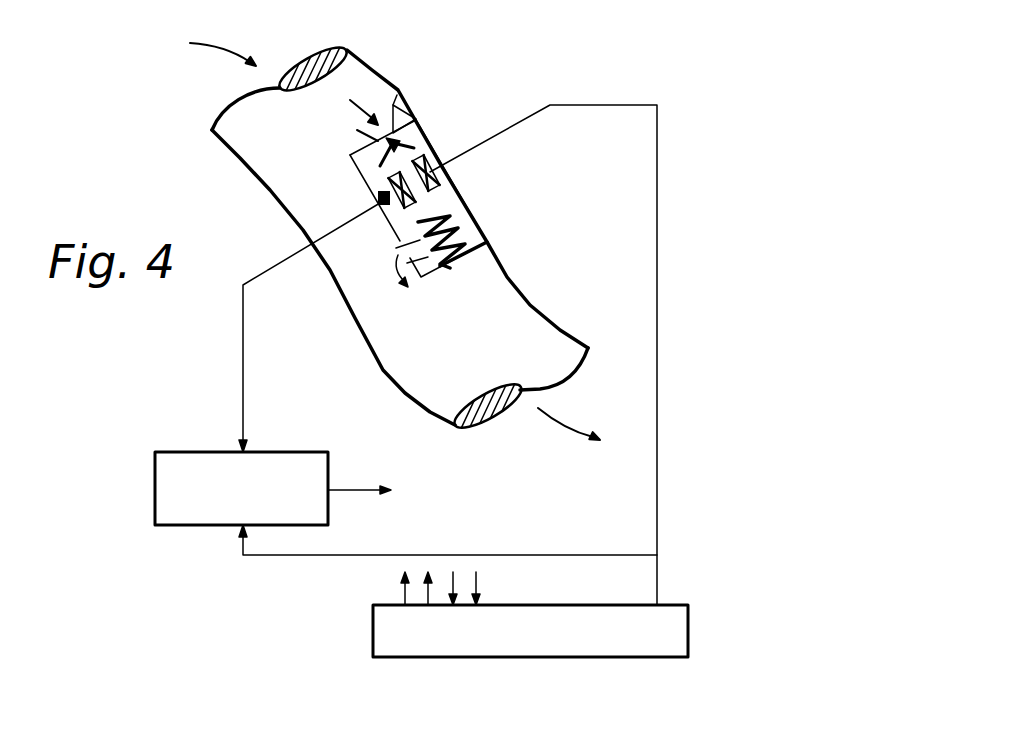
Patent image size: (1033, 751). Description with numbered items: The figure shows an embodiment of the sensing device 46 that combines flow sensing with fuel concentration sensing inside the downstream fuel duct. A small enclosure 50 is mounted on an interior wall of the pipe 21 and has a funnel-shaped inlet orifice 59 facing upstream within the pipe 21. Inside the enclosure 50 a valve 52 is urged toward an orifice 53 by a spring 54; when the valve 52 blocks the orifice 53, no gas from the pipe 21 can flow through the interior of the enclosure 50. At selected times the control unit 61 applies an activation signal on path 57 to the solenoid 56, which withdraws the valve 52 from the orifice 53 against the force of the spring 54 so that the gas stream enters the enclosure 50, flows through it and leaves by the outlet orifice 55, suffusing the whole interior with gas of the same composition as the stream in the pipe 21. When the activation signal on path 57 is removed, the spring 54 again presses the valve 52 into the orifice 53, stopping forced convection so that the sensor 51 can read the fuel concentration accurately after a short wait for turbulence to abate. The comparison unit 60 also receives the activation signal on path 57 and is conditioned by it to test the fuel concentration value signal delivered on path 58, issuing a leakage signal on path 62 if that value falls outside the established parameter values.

The pipe 21 is at (376, 366).
The sensing device 46 is at (472, 268).
The enclosure 50 is at (443, 277).
The sensor 51 is at (378, 196).
The valve 52 is at (413, 137).
The orifice 53 is at (378, 108).
The spring 54 is at (462, 218).
The orifice 55 is at (395, 254).
The solenoid 56 is at (435, 184).
The path 57 is at (522, 121).
The path 58 is at (243, 352).
The inlet orifice 59 is at (412, 104).
The comparison unit 60 is at (214, 452).
The control unit 61 is at (373, 625).
The path 62 is at (350, 491).